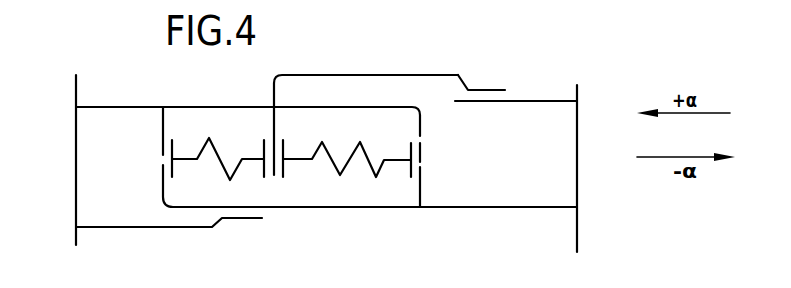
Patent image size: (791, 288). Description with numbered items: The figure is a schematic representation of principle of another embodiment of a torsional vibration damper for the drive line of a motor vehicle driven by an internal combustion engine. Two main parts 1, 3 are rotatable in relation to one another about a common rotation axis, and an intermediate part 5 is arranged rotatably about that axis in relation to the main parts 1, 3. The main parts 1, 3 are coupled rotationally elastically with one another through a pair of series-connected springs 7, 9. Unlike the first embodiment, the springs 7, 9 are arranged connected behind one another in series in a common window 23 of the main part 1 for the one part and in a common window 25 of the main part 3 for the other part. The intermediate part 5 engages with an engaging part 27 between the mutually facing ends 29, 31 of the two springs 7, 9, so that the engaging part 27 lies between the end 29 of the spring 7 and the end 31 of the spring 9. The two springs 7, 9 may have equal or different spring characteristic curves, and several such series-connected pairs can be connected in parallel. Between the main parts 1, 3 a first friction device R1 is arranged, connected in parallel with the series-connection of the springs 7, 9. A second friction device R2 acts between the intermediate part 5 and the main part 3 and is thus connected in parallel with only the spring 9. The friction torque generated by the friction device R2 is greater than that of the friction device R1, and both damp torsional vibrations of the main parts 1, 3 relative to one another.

The main part 1 is at (74, 208).
The main part 3 is at (578, 218).
The intermediate part 5 is at (355, 73).
The spring 7 is at (197, 150).
The spring 9 is at (368, 163).
The common window 23 is at (163, 123).
The common window 25 is at (163, 188).
The engaging part 27 is at (275, 120).
The spring end 29 is at (260, 170).
The spring end 31 is at (285, 167).
The first friction device R1 is at (233, 220).
The second friction device R2 is at (478, 85).